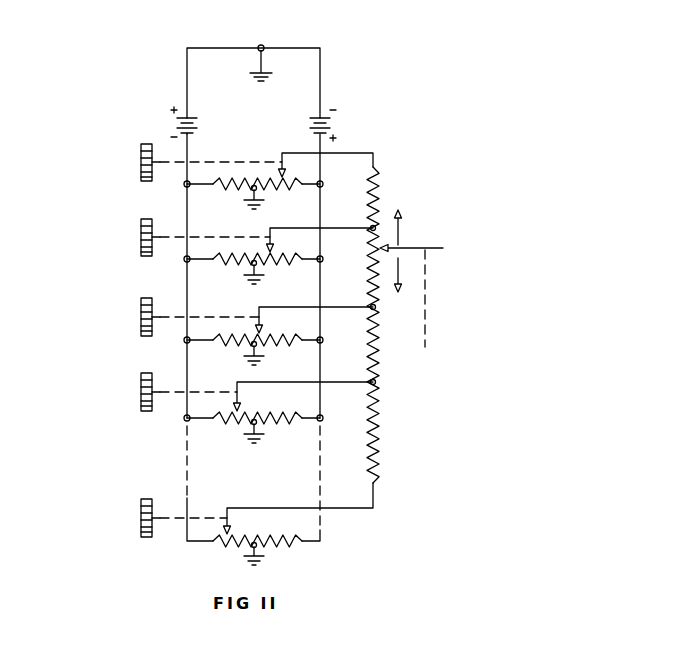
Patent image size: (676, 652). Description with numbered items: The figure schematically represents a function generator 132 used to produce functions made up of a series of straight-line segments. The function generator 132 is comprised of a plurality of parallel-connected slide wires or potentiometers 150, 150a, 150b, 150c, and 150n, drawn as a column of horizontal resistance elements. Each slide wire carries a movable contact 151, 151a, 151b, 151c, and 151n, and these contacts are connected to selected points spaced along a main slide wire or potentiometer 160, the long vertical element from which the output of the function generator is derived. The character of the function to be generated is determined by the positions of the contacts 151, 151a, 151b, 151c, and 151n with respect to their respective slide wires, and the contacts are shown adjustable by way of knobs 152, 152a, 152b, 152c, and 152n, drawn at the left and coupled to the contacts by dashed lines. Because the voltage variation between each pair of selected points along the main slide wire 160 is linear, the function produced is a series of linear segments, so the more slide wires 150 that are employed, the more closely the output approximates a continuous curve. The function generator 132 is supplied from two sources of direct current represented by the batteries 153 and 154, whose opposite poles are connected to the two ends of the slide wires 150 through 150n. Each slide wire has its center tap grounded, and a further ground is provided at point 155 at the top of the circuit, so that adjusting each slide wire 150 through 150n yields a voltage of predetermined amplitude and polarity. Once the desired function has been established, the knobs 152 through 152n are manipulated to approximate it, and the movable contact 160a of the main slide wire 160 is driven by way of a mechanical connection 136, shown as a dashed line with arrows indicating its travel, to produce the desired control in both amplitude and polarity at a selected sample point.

The function generator 132 is at (374, 25).
The ground point 155 is at (259, 70).
The battery 153 is at (173, 121).
The battery 154 is at (336, 121).
The knob 152 is at (140, 149).
The knob 152a is at (140, 234).
The knob 152b is at (140, 313).
The knob 152c is at (140, 388).
The knob 152n is at (140, 513).
The slide wire 150 is at (245, 196).
The slide wire 150a is at (246, 270).
The slide wire 150b is at (246, 350).
The slide wire 150c is at (244, 429).
The slide wire 150n is at (232, 550).
The movable contact 151 is at (284, 167).
The movable contact 151a is at (274, 238).
The movable contact 151b is at (263, 319).
The movable contact 151c is at (242, 394).
The movable contact 151n is at (234, 523).
The main slide wire 160 is at (377, 165).
The movable contact 160a is at (413, 241).
The mechanical connection 136 is at (428, 331).